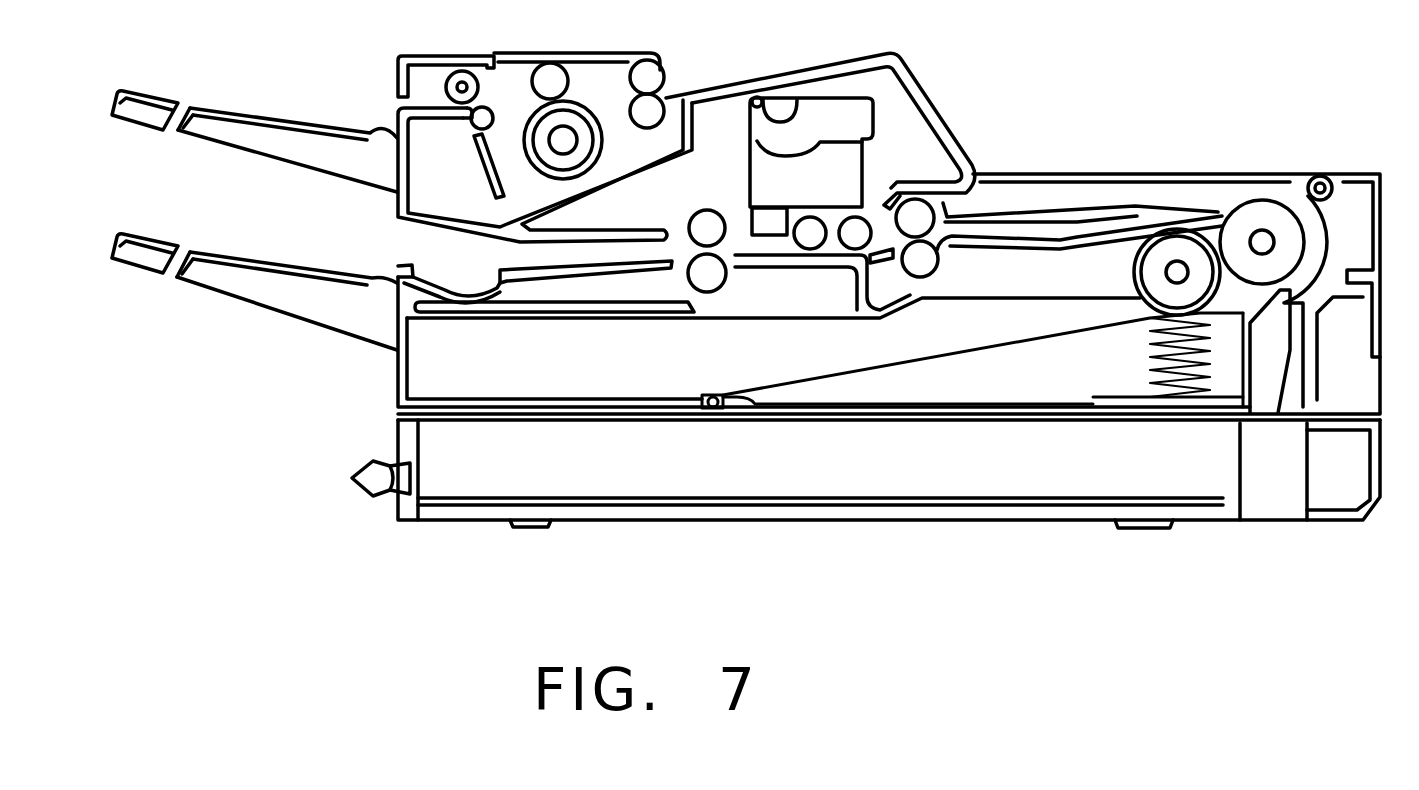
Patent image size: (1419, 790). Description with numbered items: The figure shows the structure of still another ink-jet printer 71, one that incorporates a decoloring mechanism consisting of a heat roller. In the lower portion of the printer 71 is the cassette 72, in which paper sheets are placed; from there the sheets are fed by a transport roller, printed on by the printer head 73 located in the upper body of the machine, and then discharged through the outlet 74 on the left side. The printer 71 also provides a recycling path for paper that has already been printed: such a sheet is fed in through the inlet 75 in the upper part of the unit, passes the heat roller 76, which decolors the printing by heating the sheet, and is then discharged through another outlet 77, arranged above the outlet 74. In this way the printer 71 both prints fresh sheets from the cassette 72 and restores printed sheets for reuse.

The printer 71 is at (1221, 168).
The cassette 72 is at (781, 367).
The printer head 73 is at (763, 218).
The outlet 74 is at (405, 243).
The inlet 75 is at (677, 75).
The heat roller 76 is at (540, 100).
The another outlet 77 is at (397, 100).